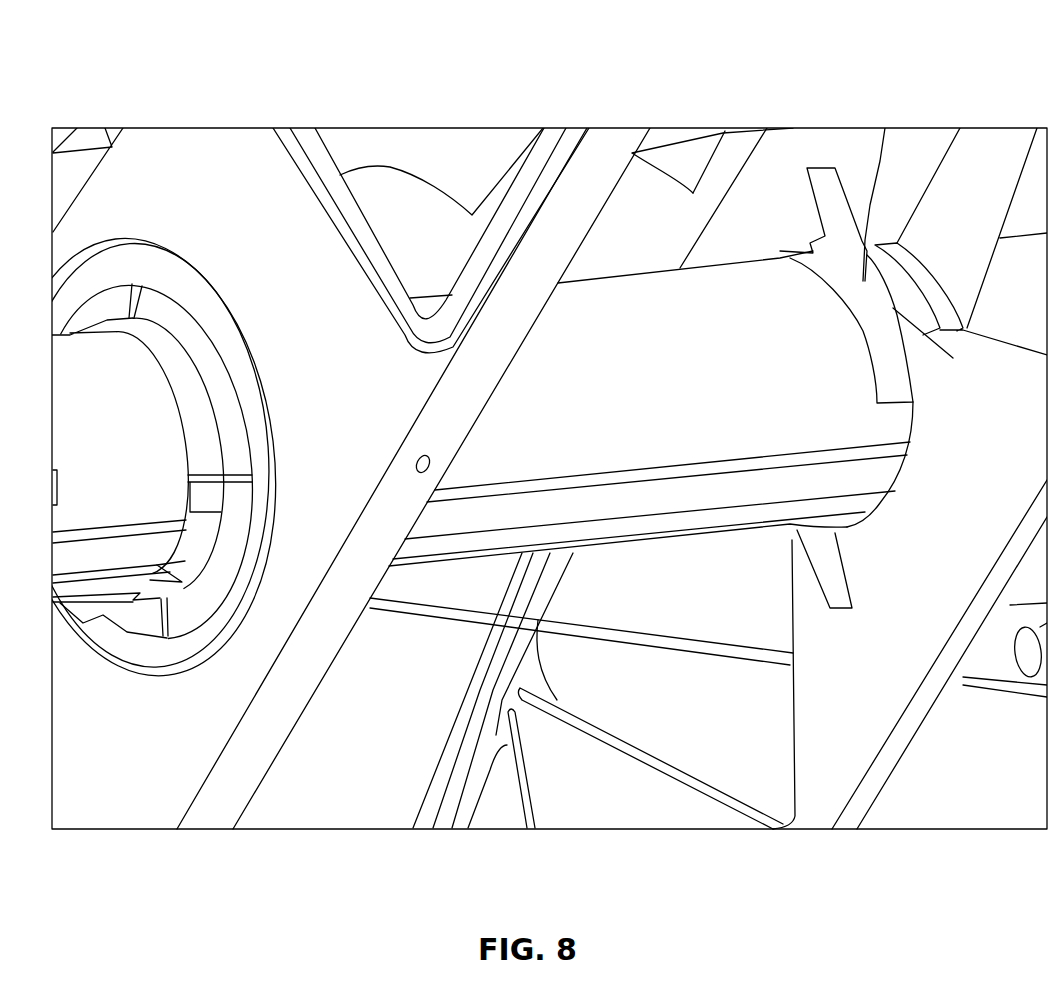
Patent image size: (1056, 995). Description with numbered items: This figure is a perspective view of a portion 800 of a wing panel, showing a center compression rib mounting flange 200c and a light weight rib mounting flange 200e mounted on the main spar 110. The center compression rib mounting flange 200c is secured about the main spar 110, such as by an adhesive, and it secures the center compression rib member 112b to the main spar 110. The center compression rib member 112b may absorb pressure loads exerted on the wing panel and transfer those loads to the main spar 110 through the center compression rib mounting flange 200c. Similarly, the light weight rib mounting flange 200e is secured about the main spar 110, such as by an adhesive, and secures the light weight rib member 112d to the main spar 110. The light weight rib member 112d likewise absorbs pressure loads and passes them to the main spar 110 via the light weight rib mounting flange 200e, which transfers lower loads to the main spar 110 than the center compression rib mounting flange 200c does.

The main spar 110 is at (653, 301).
The center compression rib member 112b is at (283, 283).
The light weight rib member 112d is at (770, 205).
The center compression rib mounting flange 200c is at (170, 308).
The light weight rib mounting flange 200e is at (867, 240).
The portion of a wing panel 800 is at (976, 86).